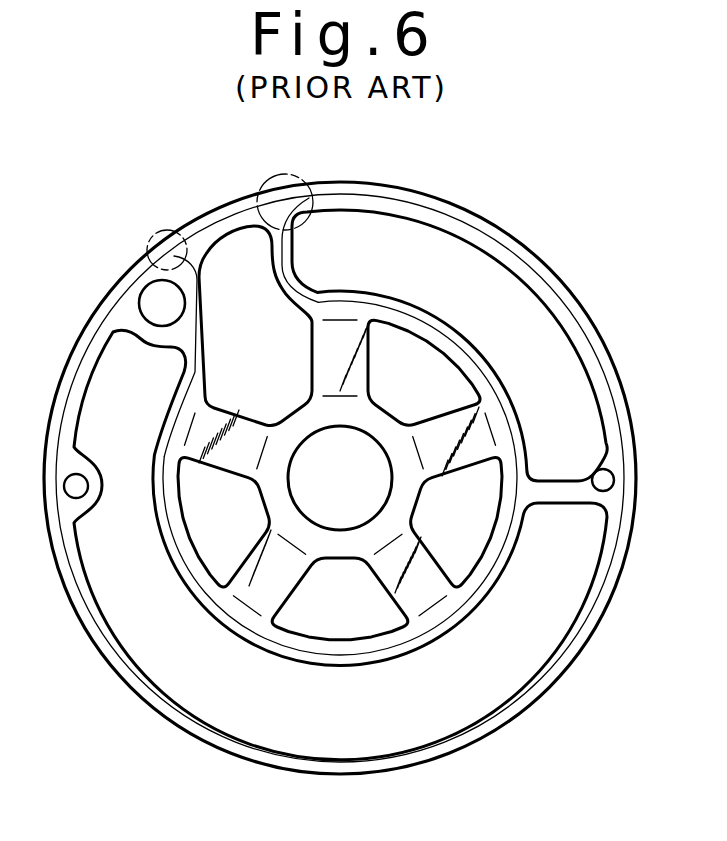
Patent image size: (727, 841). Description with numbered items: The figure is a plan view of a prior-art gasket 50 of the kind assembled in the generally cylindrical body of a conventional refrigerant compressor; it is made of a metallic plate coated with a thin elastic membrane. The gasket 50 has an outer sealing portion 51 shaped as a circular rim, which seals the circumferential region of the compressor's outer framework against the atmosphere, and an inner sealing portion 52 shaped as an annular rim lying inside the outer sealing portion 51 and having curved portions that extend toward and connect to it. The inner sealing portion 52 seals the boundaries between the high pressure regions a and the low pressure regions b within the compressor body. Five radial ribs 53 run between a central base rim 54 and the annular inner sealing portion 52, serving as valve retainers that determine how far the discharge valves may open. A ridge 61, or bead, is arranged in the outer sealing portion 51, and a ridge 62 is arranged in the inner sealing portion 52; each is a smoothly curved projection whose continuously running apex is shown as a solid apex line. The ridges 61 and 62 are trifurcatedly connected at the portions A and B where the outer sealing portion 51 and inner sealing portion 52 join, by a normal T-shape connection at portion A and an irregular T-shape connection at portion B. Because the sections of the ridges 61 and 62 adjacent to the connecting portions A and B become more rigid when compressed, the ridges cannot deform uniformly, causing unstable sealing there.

The gasket 50 is at (454, 201).
The outer sealing portion 51 is at (505, 243).
The inner sealing portion 52 is at (508, 413).
The radial ribs 53 is at (323, 358).
The central base rim 54 is at (402, 502).
The ridge 61 is at (548, 279).
The ridge 62 is at (440, 331).
The connecting portion A is at (158, 239).
The connecting portion B is at (285, 185).
The high pressure regions a is at (261, 323).
The low pressure regions b is at (376, 270).